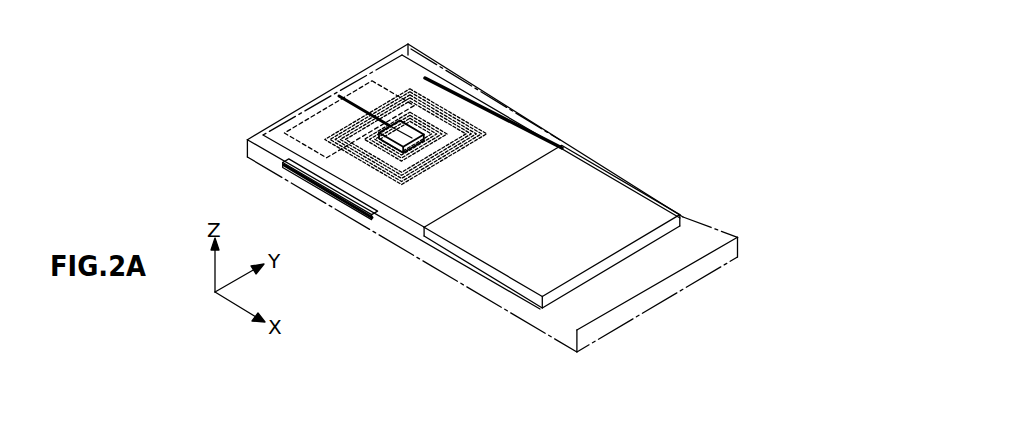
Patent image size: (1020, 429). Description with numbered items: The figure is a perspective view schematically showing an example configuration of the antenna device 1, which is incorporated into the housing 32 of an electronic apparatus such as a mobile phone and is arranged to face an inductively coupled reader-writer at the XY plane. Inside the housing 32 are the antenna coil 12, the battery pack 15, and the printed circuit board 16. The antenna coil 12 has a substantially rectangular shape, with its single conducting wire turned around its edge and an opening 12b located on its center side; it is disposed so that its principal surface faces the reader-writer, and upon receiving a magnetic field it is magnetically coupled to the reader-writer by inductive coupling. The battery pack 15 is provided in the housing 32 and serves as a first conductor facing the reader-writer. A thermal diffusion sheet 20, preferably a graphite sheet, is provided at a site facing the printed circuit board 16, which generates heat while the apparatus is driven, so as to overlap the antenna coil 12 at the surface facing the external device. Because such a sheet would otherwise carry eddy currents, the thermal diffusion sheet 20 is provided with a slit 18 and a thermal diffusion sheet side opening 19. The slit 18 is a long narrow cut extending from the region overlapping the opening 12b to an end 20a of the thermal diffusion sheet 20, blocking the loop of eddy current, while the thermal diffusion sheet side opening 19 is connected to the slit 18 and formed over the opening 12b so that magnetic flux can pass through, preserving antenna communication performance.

The antenna device 1 is at (492, 176).
The antenna coil 12 is at (429, 108).
The opening 12b is at (458, 108).
The battery pack 15 is at (600, 192).
The printed circuit board 16 is at (328, 177).
The slit 18 is at (333, 95).
The thermal diffusion sheet side opening 19 is at (400, 137).
The thermal diffusion sheet 20 is at (415, 75).
The end of the thermal diffusion sheet 20a is at (357, 78).
The housing 32 is at (694, 207).